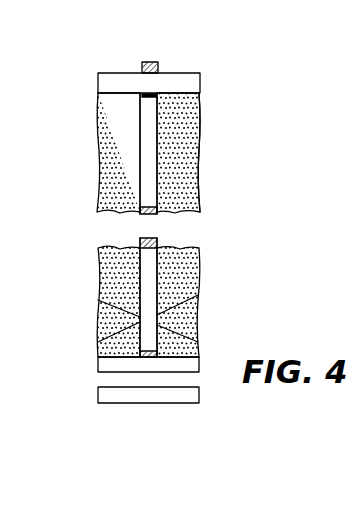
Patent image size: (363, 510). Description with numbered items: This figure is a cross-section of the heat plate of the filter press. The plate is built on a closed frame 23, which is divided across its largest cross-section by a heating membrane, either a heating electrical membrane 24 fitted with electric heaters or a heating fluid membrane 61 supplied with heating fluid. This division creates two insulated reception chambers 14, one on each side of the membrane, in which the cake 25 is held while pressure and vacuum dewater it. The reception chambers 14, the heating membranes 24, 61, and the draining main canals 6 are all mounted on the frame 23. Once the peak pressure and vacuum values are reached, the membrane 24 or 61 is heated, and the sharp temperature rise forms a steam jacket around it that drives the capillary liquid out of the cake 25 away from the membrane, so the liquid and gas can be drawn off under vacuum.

The closed frame 23 is at (121, 84).
The heating electrical membrane 24 is at (268, 62).
The heating fluid membrane 61 is at (201, 96).
The cake 25 is at (178, 148).
The reception chambers 14 is at (182, 320).
The draining main canals 6 is at (173, 378).